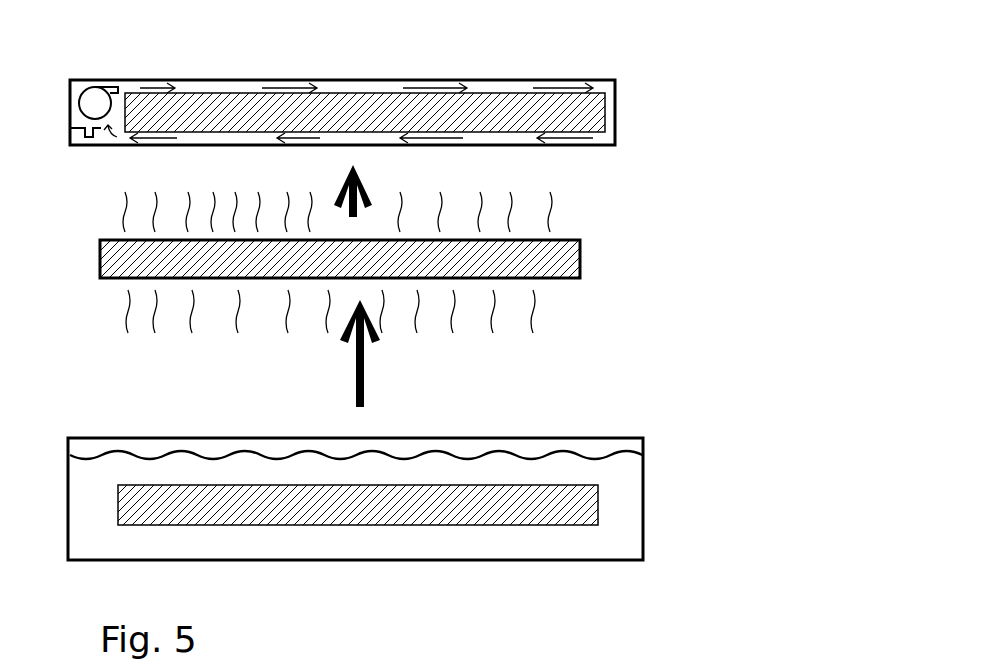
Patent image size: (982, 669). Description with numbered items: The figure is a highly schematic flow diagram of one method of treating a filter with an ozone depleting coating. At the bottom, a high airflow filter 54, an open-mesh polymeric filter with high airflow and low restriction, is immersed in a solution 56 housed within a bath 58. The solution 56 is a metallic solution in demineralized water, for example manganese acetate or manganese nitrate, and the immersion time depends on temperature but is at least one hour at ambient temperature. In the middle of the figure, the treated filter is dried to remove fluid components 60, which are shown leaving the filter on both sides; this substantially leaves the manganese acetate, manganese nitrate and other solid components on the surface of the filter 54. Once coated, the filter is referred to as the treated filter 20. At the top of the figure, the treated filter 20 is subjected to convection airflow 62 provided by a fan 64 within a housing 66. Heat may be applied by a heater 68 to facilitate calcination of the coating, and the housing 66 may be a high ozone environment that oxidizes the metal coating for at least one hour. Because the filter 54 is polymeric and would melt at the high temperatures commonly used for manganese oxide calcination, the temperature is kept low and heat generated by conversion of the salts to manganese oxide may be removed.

The filter 20 is at (540, 93).
The high airflow filter 54 is at (598, 502).
The solution 56 is at (643, 505).
The bath 58 is at (643, 535).
The fluid components 60 is at (562, 217).
The convection airflow 62 is at (433, 77).
The fan 64 is at (79, 101).
The housing 66 is at (615, 127).
The heater 68 is at (88, 146).